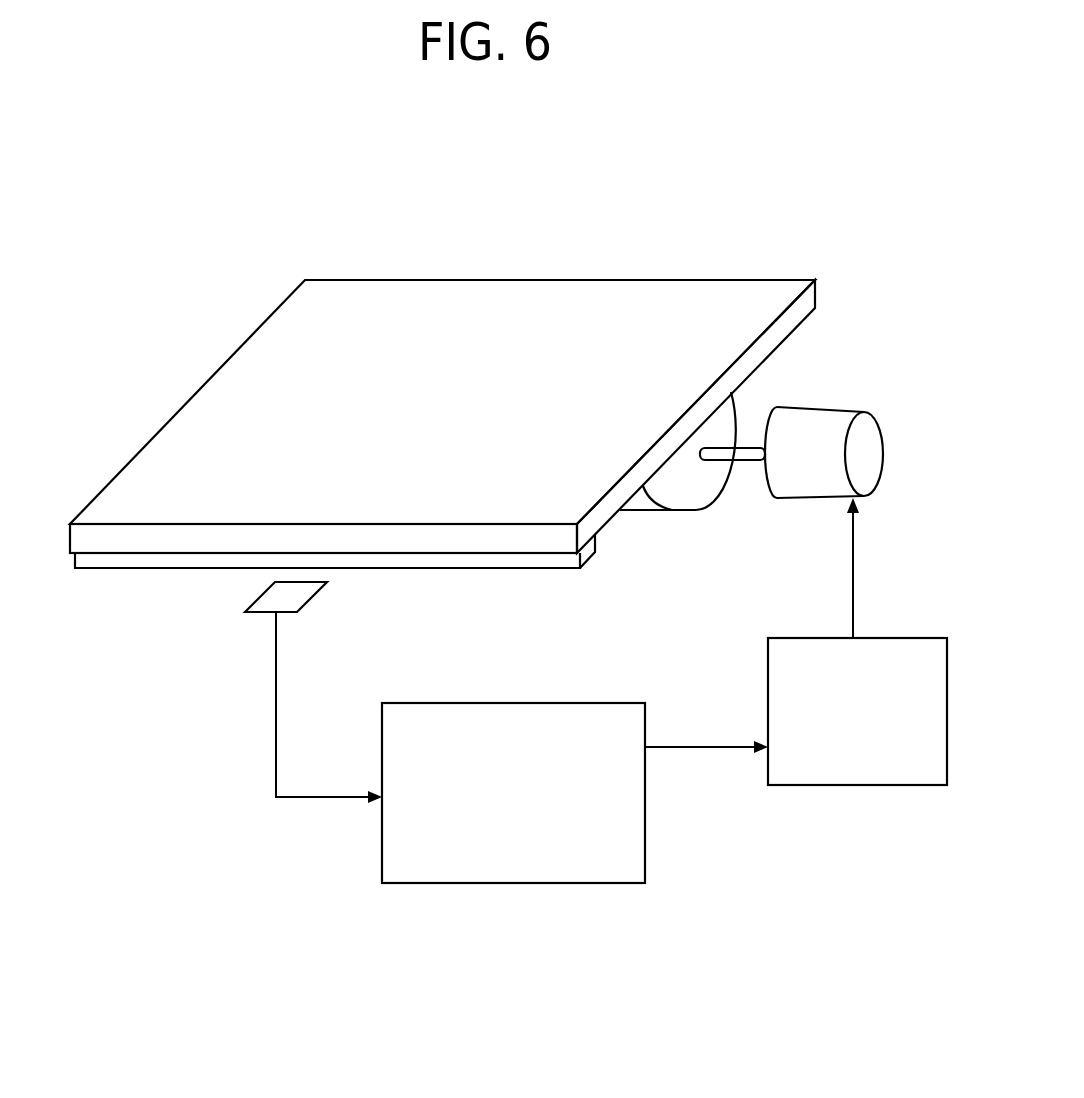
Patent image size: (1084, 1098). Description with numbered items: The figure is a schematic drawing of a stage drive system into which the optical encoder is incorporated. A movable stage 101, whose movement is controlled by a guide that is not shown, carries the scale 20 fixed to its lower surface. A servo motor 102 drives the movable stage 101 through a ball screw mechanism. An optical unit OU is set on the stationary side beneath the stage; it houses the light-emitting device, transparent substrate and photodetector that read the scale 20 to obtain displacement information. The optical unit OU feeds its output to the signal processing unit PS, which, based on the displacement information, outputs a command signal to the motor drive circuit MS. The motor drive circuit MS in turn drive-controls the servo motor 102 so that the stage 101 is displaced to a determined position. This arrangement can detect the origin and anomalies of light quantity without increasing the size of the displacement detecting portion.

The movable stage 101 is at (386, 280).
The servo motor 102 is at (842, 408).
The scale 20 is at (588, 548).
The optical unit OU is at (268, 597).
The signal processing unit PS is at (503, 883).
The motor drive circuit MS is at (855, 785).